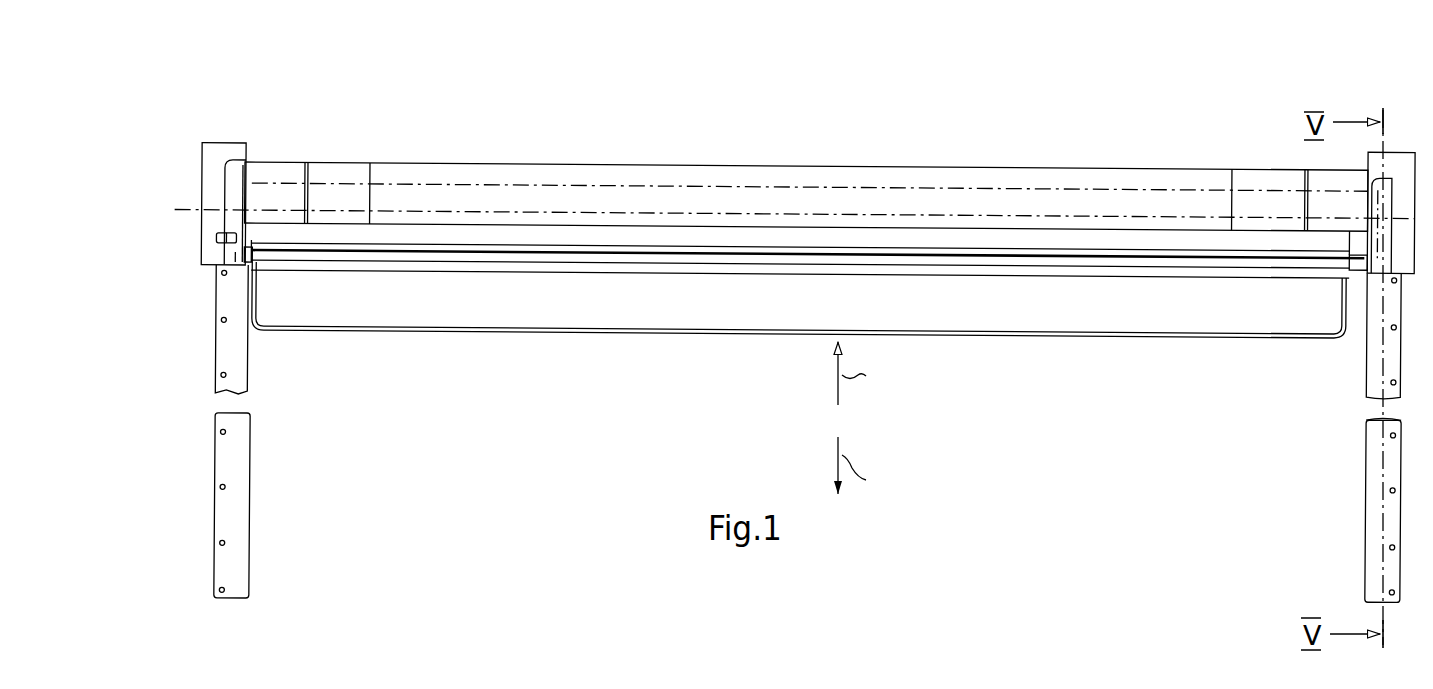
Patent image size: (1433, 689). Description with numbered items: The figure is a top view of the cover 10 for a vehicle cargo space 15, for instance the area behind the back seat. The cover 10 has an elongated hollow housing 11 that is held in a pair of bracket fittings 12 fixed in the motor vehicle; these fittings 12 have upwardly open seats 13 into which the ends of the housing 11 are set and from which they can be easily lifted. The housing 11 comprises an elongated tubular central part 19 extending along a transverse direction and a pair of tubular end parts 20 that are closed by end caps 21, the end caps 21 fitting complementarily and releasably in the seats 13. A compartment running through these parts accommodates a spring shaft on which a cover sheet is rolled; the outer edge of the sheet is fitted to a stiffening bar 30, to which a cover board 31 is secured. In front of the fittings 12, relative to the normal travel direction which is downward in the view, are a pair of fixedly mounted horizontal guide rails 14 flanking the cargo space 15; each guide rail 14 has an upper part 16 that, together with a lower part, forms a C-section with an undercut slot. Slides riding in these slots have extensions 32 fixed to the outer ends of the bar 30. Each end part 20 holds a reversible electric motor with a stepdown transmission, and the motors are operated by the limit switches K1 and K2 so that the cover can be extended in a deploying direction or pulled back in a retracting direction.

The cover 10 is at (1070, 88).
The hollow housing 11 is at (853, 162).
The bracket fittings 12 is at (220, 130).
The seats 13 is at (236, 176).
The guide rails 14 is at (270, 517).
The cargo space 15 is at (904, 424).
The upper part 16 is at (252, 365).
The tubular central part 19 is at (733, 163).
The tubular end parts 20 is at (334, 152).
The end caps 21 is at (260, 181).
The stiffening bar 30 is at (639, 280).
The cover board 31 is at (794, 338).
The extensions 32 is at (260, 257).
The limit switch K1 is at (211, 229).
The limit switch K2 is at (236, 276).